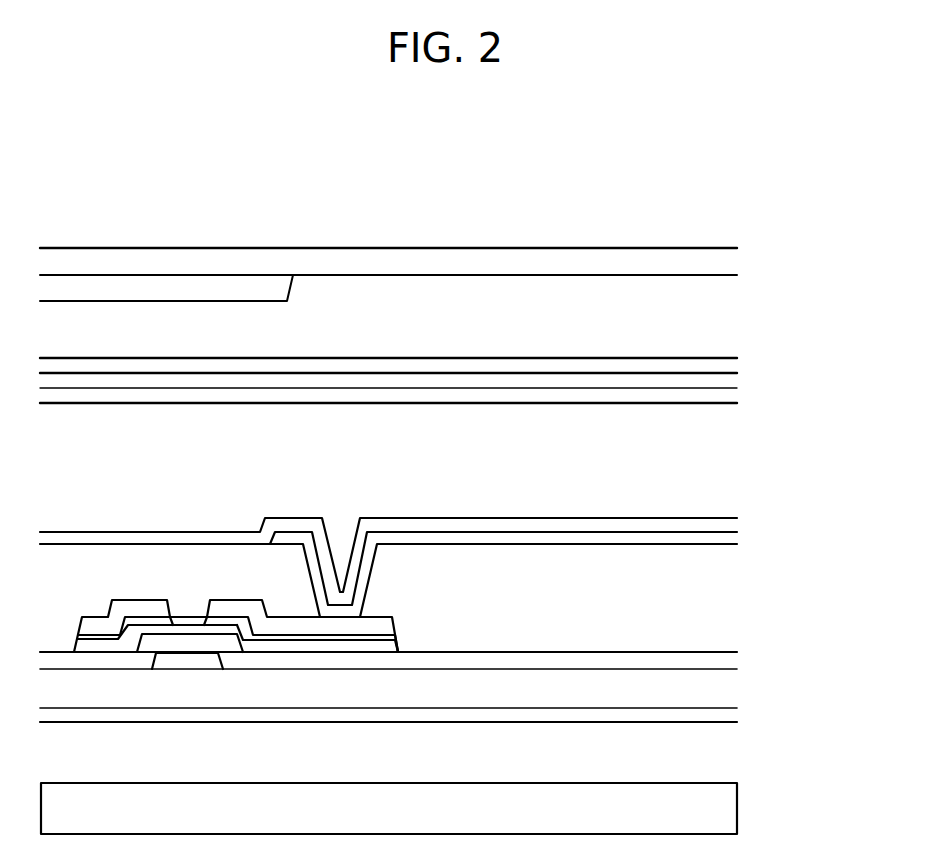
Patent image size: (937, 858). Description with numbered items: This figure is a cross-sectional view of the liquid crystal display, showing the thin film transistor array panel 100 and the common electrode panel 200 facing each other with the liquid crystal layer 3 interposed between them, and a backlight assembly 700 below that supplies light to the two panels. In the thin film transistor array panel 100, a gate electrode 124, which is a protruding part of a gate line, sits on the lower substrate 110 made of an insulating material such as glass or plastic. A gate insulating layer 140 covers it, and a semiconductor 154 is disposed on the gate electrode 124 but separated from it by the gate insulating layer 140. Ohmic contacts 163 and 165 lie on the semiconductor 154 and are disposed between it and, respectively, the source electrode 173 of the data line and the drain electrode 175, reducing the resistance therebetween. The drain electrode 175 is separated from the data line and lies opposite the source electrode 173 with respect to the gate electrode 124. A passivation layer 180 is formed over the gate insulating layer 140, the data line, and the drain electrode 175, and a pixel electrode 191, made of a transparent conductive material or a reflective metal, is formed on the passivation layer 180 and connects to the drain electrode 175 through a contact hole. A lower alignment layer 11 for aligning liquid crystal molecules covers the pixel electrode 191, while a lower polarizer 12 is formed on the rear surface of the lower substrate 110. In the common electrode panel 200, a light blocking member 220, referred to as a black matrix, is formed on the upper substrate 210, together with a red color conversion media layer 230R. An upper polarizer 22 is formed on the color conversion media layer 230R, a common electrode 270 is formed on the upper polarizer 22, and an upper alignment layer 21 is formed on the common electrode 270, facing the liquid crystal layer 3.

The common electrode panel 200 is at (815, 250).
The upper substrate 210 is at (725, 262).
The light blocking member 220 is at (153, 290).
The red color conversion media layer 230R is at (725, 313).
The upper polarizer 22 is at (725, 367).
The common electrode 270 is at (725, 380).
The upper alignment layer 21 is at (725, 396).
The liquid crystal layer 3 is at (725, 460).
The thin film transistor array panel 100 is at (805, 507).
The lower alignment layer 11 is at (738, 522).
The pixel electrode 191 is at (725, 538).
The passivation layer 180 is at (725, 605).
The source electrode 173 is at (93, 627).
The ohmic contact 163 is at (118, 637).
The gate electrode 124 is at (188, 662).
The semiconductor 154 is at (267, 647).
The ohmic contact 165 is at (323, 643).
The drain electrode 175 is at (380, 623).
The gate insulating layer 140 is at (725, 660).
The lower substrate 110 is at (725, 690).
The lower polarizer 12 is at (725, 716).
The backlight assembly 700 is at (725, 810).